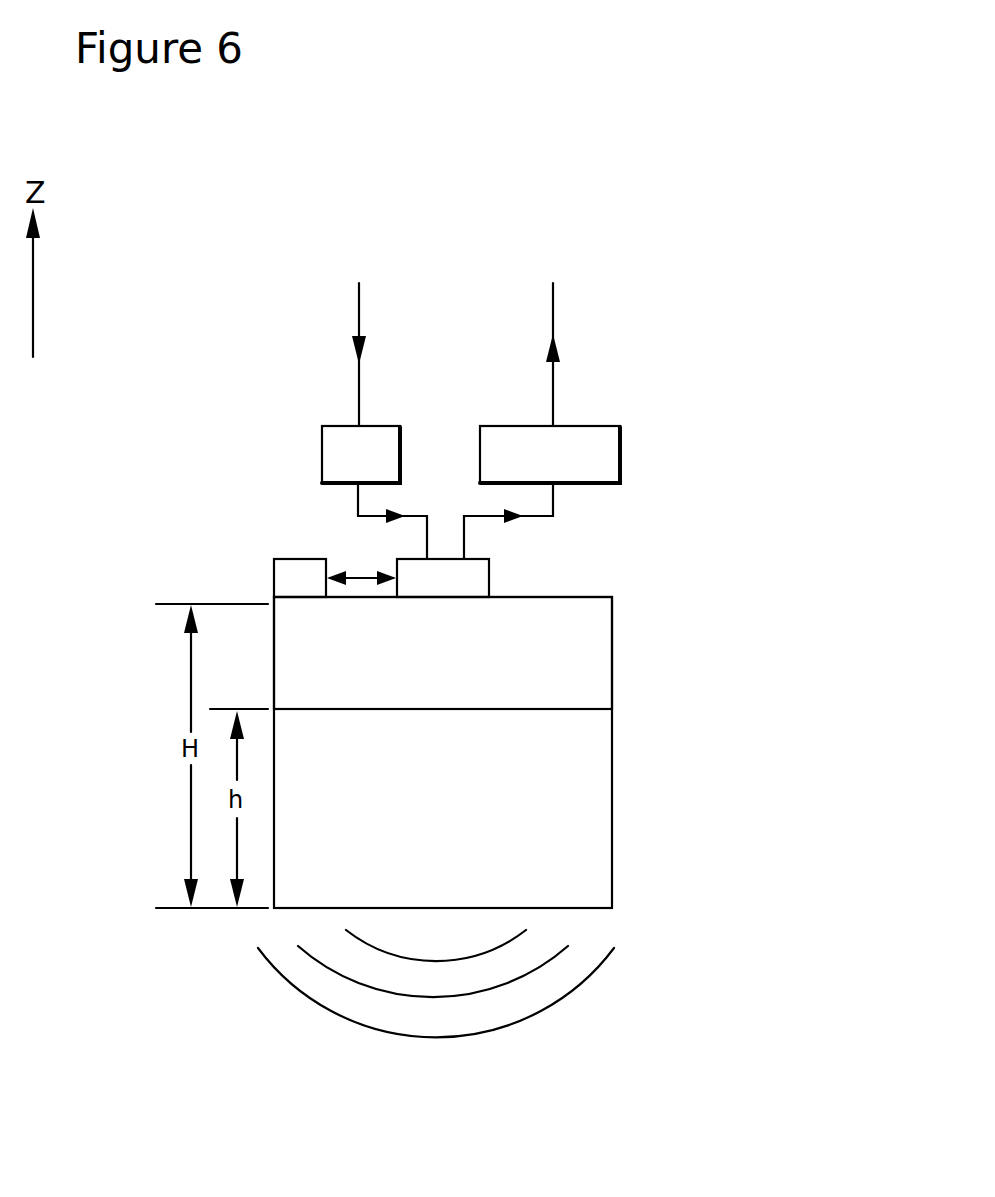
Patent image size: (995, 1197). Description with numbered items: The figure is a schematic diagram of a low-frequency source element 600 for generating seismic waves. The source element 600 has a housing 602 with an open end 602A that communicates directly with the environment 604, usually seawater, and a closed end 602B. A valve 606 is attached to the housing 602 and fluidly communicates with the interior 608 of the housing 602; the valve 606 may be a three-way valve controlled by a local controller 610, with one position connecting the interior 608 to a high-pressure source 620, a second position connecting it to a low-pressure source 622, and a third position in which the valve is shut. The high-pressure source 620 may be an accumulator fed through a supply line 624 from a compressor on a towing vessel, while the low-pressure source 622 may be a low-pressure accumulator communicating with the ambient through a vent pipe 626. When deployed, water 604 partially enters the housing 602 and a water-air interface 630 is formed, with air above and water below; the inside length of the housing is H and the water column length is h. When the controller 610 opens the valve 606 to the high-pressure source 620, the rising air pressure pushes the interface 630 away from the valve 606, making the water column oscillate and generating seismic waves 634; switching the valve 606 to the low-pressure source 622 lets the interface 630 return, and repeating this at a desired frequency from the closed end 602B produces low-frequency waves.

The source element 600 is at (427, 176).
The housing 602 is at (612, 763).
The open end 602A is at (612, 888).
The closed end 602B is at (612, 629).
The environment 604 is at (752, 961).
The valve 606 is at (490, 565).
The interior 608 is at (462, 668).
The local controller 610 is at (276, 559).
The high-pressure source 620 is at (322, 455).
The low-pressure source 622 is at (605, 427).
The supply line 624 is at (358, 313).
The output signal 626 is at (555, 303).
The water-air interface 630 is at (558, 709).
The seismic waves 634 is at (440, 997).